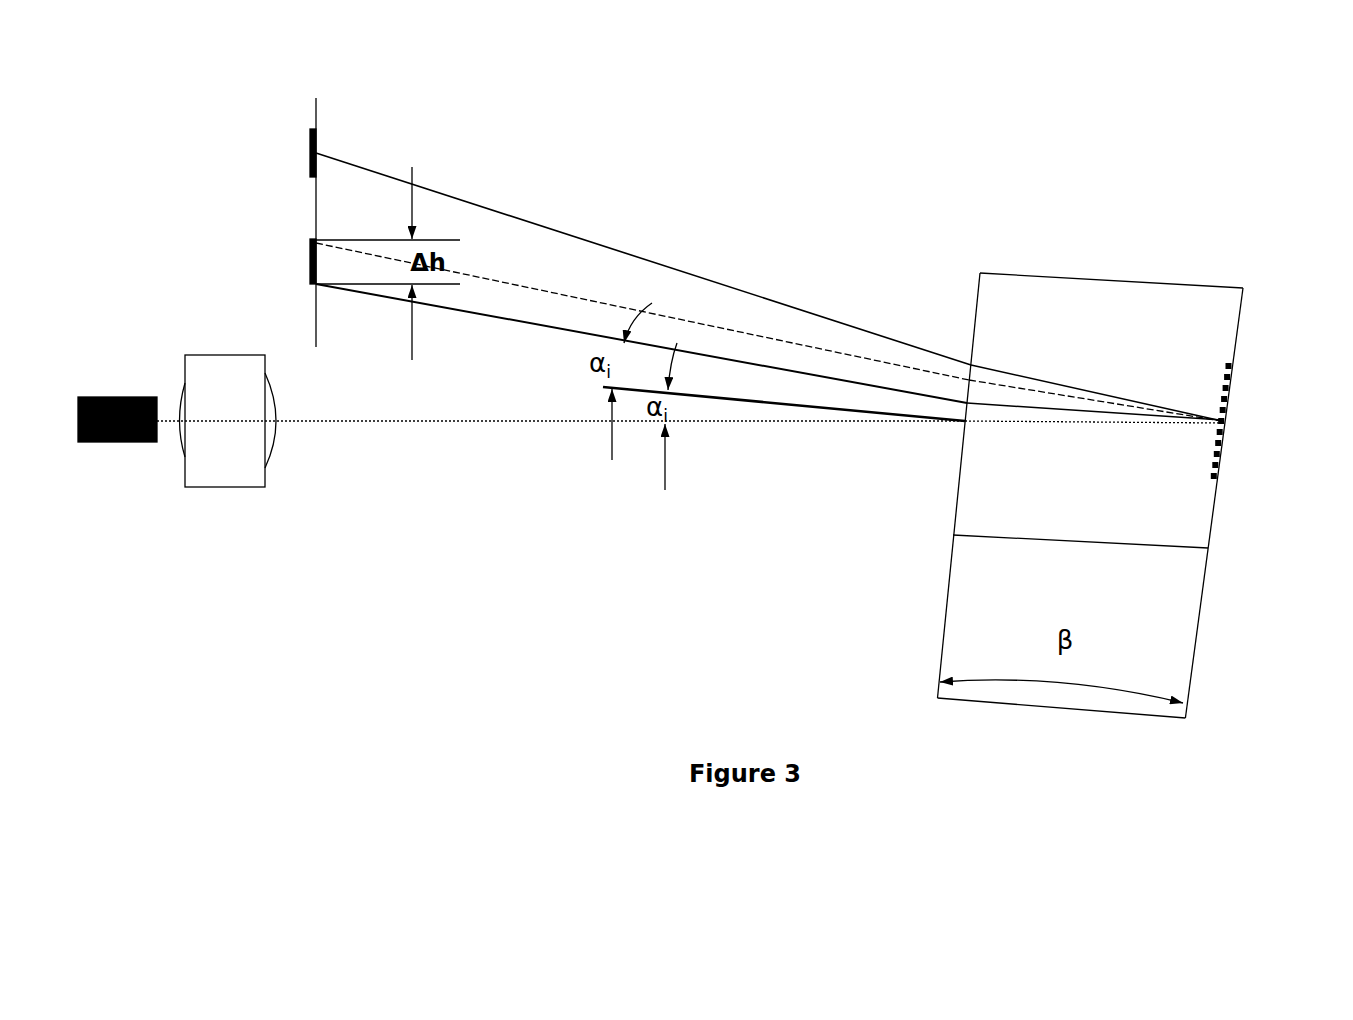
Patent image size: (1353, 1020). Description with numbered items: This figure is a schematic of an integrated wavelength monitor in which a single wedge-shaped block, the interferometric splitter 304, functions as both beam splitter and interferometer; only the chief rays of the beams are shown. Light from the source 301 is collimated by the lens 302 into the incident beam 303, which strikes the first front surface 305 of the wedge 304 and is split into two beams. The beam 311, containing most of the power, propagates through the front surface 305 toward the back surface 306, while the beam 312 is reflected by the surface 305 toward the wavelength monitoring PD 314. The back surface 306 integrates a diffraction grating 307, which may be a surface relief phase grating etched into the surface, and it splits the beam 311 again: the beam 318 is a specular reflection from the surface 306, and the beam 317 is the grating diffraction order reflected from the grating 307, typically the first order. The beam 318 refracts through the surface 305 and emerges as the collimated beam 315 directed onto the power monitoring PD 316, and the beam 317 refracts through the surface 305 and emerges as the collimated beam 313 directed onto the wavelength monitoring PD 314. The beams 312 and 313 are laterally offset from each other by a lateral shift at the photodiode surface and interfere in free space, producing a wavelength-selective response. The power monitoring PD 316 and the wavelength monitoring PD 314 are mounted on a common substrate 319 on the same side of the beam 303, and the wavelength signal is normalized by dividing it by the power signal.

The light source 301 is at (113, 458).
The lens 302 is at (228, 456).
The incident beam 303 is at (756, 462).
The interferometric splitter 304 is at (1091, 471).
The first front surface 305 is at (919, 485).
The back surface 306 is at (1240, 503).
The diffraction grating 307 is at (1238, 386).
The beam 311 is at (1093, 444).
The beam 312 is at (769, 352).
The collimated beam 313 is at (642, 311).
The wavelength monitoring PD 314 is at (266, 261).
The collimated beam 315 is at (643, 259).
The power monitoring PD 316 is at (266, 152).
The beam 317 is at (995, 386).
The beam 318 is at (1089, 388).
The common substrate 319 is at (324, 106).